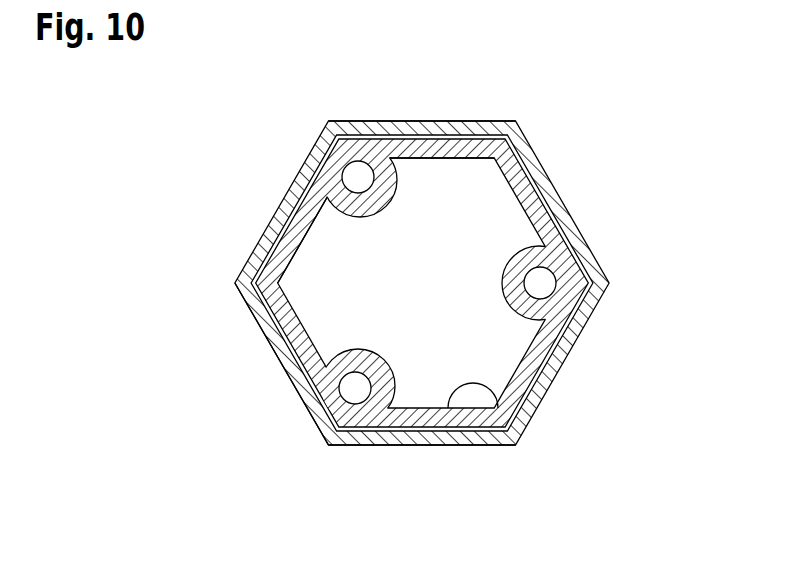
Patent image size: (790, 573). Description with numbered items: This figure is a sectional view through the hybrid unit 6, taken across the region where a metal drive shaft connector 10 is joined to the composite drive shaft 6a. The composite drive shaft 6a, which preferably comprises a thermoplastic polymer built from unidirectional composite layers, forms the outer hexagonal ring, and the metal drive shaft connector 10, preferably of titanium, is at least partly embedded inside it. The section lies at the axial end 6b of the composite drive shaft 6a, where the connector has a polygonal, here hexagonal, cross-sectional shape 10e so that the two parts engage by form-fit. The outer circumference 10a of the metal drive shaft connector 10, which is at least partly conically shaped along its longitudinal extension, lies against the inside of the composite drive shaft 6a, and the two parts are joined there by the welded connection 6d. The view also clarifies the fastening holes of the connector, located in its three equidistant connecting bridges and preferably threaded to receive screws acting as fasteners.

The hybrid unit 6 is at (586, 170).
The composite drive shaft 6a is at (421, 438).
The axial end of the composite drive shaft 6b is at (349, 120).
The welded connection 6d is at (266, 352).
The metal drive shaft connector 10 is at (510, 405).
The outer circumference 10a is at (473, 142).
The hexagonal cross-sectional shape 10e is at (274, 228).